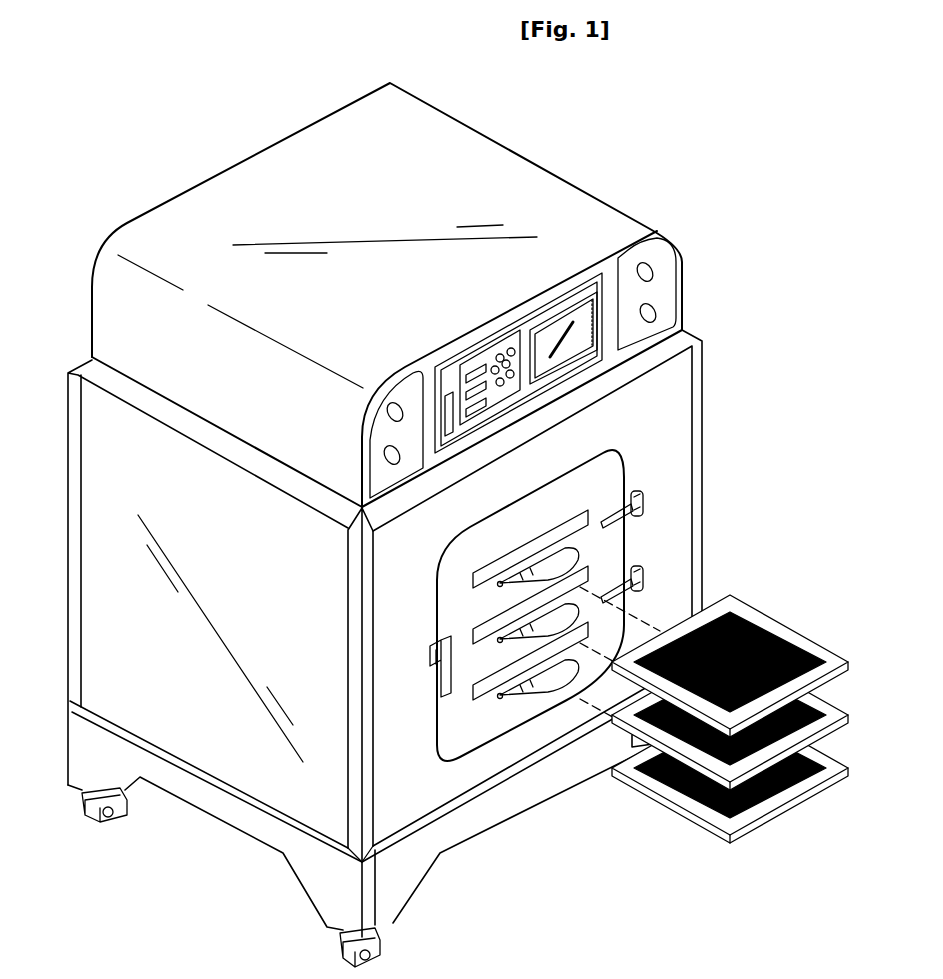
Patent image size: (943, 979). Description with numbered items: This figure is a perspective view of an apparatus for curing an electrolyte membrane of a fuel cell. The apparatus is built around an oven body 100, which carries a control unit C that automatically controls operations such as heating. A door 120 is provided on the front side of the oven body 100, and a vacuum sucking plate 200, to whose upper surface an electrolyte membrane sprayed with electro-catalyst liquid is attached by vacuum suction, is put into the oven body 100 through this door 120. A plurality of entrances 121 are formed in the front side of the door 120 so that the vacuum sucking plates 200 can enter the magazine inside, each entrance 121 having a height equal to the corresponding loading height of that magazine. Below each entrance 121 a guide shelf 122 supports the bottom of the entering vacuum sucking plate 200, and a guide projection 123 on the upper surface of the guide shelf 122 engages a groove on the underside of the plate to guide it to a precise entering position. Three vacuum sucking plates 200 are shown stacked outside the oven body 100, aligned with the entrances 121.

The oven body 100 is at (702, 390).
The door 120 is at (605, 476).
The entrances 121 is at (618, 525).
The guide shelf 122 is at (545, 560).
The guide projection 123 is at (540, 676).
The vacuum sucking plate 200 is at (757, 817).
The control unit C is at (598, 287).